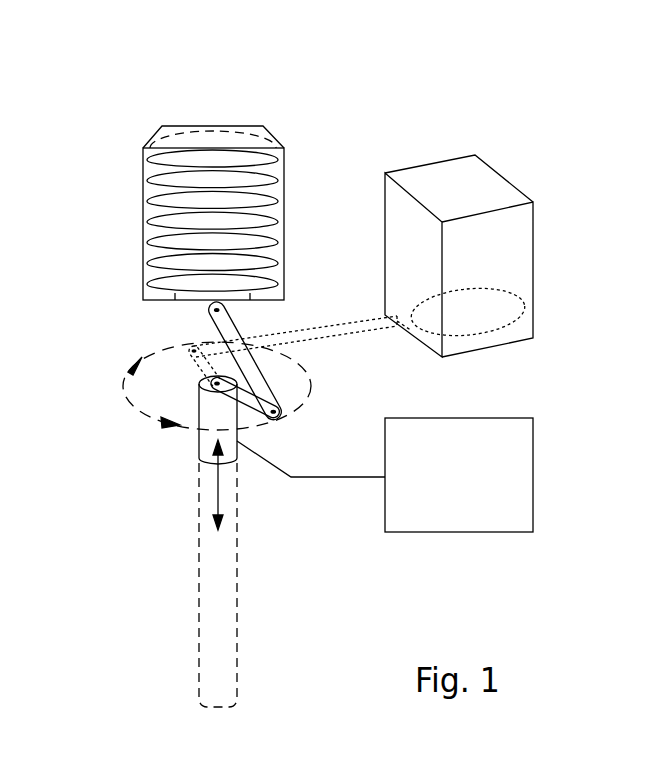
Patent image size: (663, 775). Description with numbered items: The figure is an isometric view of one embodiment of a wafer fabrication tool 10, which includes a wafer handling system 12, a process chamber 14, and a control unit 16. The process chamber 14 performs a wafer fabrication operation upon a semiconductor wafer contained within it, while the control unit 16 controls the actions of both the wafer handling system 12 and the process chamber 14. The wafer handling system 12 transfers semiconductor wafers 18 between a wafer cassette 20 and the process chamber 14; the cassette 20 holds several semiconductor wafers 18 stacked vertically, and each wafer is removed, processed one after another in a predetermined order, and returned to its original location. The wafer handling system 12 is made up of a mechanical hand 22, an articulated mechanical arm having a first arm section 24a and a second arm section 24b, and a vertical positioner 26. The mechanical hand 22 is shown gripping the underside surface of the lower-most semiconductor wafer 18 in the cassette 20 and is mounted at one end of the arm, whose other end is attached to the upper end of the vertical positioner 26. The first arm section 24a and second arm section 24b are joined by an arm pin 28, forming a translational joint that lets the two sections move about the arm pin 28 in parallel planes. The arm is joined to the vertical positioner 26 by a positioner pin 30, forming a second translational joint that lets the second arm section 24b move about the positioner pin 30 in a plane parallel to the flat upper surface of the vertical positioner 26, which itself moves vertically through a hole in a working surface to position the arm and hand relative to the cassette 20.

The wafer fabrication tool 10 is at (462, 107).
The wafer handling system 12 is at (105, 345).
The process chamber 14 is at (497, 168).
The control unit 16 is at (445, 505).
The semiconductor wafers 18 is at (148, 270).
The wafer cassette 20 is at (178, 176).
The mechanical hand 22 is at (304, 417).
The first arm section 24a is at (264, 385).
The second arm section 24b is at (256, 411).
The vertical positioner 26 is at (199, 441).
The arm pin 28 is at (268, 406).
The positioner pin 30 is at (200, 385).